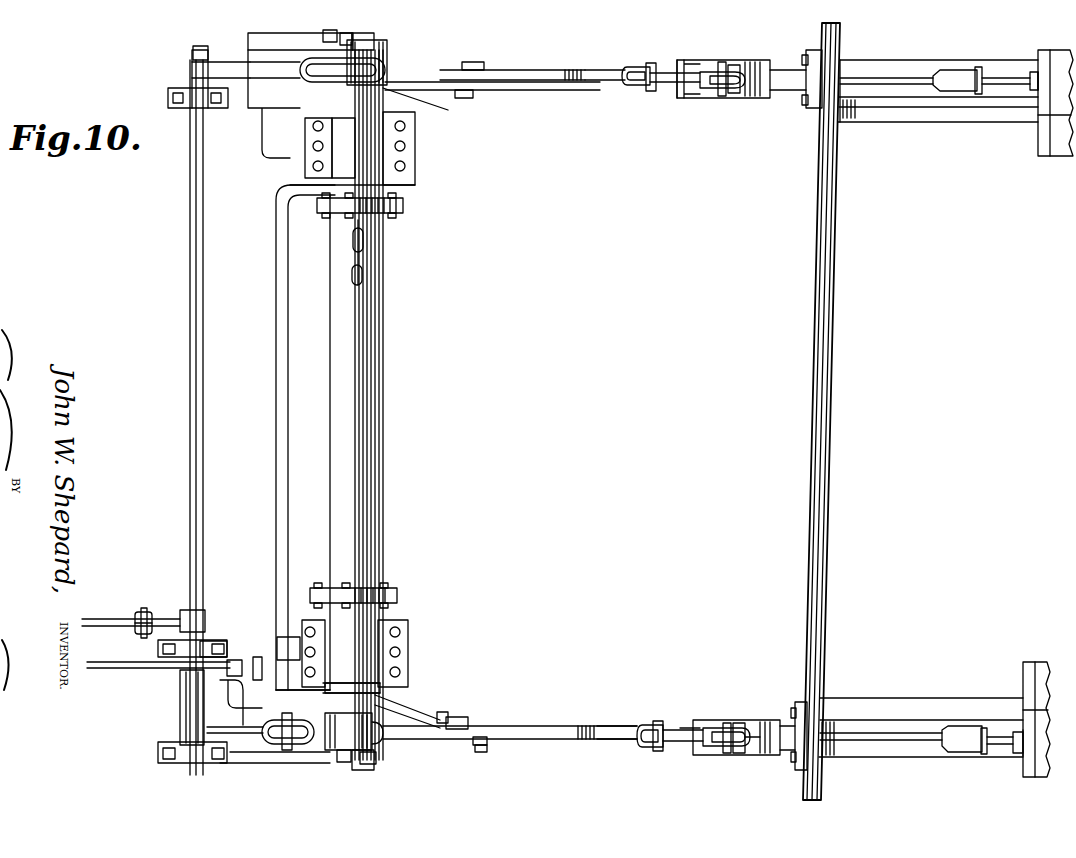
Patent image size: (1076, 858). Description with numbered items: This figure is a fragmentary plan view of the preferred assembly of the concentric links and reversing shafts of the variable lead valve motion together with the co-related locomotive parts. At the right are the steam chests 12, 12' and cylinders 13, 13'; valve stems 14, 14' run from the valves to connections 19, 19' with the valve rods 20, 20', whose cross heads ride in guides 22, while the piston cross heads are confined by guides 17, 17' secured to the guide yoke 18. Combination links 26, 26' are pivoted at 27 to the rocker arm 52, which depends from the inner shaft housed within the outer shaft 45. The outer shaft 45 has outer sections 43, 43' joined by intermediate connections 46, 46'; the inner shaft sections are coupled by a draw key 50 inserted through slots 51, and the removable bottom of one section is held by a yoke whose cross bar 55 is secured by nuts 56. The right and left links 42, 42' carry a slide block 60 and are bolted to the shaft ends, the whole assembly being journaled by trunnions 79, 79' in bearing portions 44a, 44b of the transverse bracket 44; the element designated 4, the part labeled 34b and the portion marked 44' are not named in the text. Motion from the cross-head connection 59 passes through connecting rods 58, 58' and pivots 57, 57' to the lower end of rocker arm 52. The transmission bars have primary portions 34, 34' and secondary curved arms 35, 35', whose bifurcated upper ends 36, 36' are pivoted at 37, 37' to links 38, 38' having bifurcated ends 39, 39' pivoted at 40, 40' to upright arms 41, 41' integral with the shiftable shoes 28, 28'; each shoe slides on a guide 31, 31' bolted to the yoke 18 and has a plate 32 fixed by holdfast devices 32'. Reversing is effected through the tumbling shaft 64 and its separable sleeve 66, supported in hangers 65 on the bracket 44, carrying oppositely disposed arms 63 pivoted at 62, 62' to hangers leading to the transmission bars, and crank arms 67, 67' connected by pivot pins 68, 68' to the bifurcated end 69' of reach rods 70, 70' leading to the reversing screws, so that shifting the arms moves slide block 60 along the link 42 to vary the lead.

The shaft 4 is at (358, 33).
The steam chest 12 is at (1015, 762).
The steam chest 12' is at (1021, 62).
The cylinder 13 is at (1036, 706).
The cylinder 13' is at (1051, 122).
The valve stem 14 is at (1005, 715).
The valve stem 14' is at (1010, 112).
The guide 17 is at (921, 718).
The guide 17' is at (938, 108).
The guide yoke 18 is at (826, 384).
The connection 19 is at (964, 755).
The connection 19' is at (957, 65).
The valve rod 20 is at (881, 757).
The valve rod 20' is at (886, 60).
The guide 22 is at (684, 728).
The combination link 26 is at (460, 714).
The combination link 26' is at (491, 109).
The pivot connection 27 is at (442, 712).
The shiftable shoe 28 is at (736, 718).
The shiftable shoe 28' is at (723, 99).
The guide 31 is at (782, 716).
The guide 31' is at (785, 104).
The plate 32 is at (736, 741).
The holdfast device 32' is at (745, 71).
The primary portion of transmission bar 34 is at (428, 754).
The primary portion of transmission bar 34' is at (512, 62).
The link 34b is at (305, 80).
The curved arm 35 is at (617, 710).
The curved arm 35' is at (605, 62).
The bifurcated upper end 36 is at (631, 743).
The bifurcated upper end 36' is at (615, 102).
The pivot 37 is at (642, 751).
The pivot 37' is at (638, 101).
The link 38 is at (675, 711).
The link 38' is at (672, 116).
The bifurcated end 39 is at (745, 709).
The bifurcated end 39' is at (710, 105).
The pivot 40 is at (737, 753).
The pivot 40' is at (745, 62).
The upper arm 41 is at (713, 751).
The upper arm 41' is at (717, 65).
The right link 42 is at (374, 737).
The left link 42' is at (387, 58).
The outer section 43 is at (328, 695).
The outer section 43' is at (376, 186).
The bracket 44 is at (269, 408).
The bearing block 44' is at (377, 653).
The bearing portion 44a is at (378, 760).
The bearing portion 44b is at (375, 35).
The outer shaft 45 is at (385, 361).
The intermediate connection 46 is at (374, 595).
The intermediate connection 46' is at (389, 206).
The draw key 50 is at (366, 242).
The slot 51 is at (365, 272).
The rocker arm 52 is at (460, 717).
The cross bar 55 is at (352, 106).
The nut 56 is at (390, 700).
The pivot connection 57 is at (478, 766).
The pivot connection 57' is at (466, 113).
The connecting rod 58 is at (503, 704).
The connecting rod 58' is at (477, 46).
The pivot connection 59 is at (280, 640).
The slide block 60 is at (243, 705).
The pivot 62 is at (288, 748).
The pivot 62' is at (322, 47).
The arm 63 is at (215, 62).
The tumbling shaft 64 is at (188, 372).
The bearing hanger 65 is at (165, 763).
The sleeve 66 is at (182, 712).
The crank arm 67 is at (188, 680).
The crank arm 67' is at (214, 606).
The pivot pin 68 is at (197, 686).
The pivot pin 68' is at (141, 603).
The bifurcated end 69' is at (122, 638).
The reach rod 70 is at (158, 681).
The reach rod 70' is at (131, 607).
The trunnion 79 is at (369, 769).
The trunnion 79' is at (321, 24).